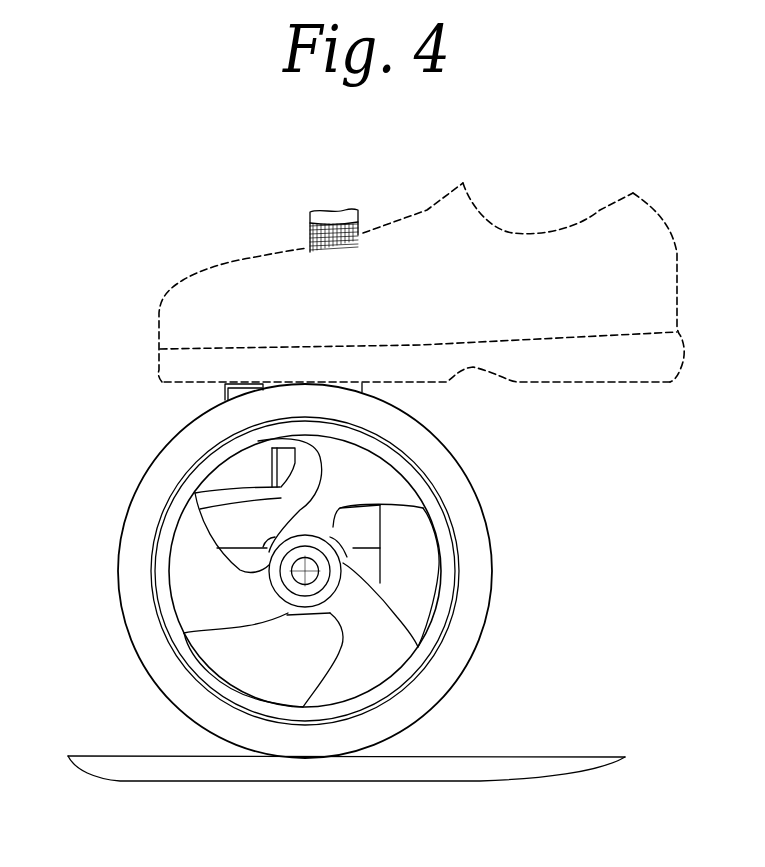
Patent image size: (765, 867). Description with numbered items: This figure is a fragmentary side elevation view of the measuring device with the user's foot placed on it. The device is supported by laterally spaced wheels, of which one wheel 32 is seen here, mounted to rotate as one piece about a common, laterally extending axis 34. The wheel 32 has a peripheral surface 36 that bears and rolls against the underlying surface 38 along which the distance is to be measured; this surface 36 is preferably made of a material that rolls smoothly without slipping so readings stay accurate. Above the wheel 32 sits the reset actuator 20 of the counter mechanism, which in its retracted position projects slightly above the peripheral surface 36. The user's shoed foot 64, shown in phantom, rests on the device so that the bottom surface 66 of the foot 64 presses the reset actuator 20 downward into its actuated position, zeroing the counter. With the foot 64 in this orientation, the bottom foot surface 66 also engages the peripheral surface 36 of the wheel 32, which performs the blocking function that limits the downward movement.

The reset actuator 20 is at (230, 392).
The wheel 32 is at (462, 466).
The axis 34 is at (315, 562).
The peripheral surface 36 is at (487, 527).
The underlying surface 38 is at (517, 755).
The shoed foot 64 is at (302, 290).
The bottom surface of the foot 66 is at (175, 382).